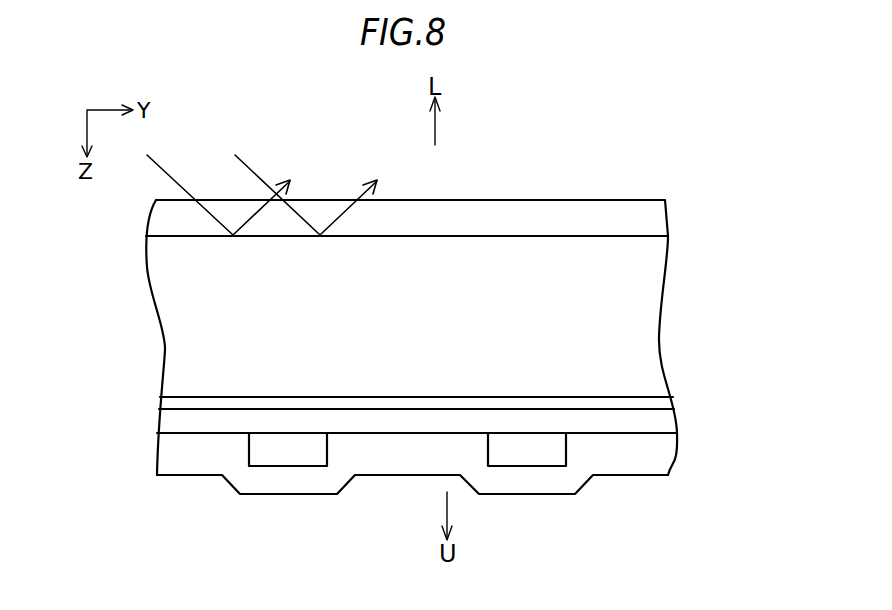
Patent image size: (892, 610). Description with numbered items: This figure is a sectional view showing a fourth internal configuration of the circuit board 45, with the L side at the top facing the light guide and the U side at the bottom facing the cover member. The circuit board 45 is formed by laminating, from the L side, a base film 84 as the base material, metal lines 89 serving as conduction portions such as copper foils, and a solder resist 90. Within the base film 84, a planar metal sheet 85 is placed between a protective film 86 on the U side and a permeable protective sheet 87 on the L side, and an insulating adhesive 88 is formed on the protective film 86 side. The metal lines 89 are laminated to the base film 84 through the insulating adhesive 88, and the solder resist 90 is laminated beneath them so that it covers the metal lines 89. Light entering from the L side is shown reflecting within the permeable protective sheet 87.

The circuit board 45 is at (228, 133).
The base film 84 is at (743, 190).
The planar metal sheet 85 is at (628, 310).
The protective film 86 is at (628, 403).
The permeable protective sheet 87 is at (628, 215).
The insulating adhesive 88 is at (628, 425).
The metal lines 89 is at (548, 450).
The solder resist 90 is at (645, 475).